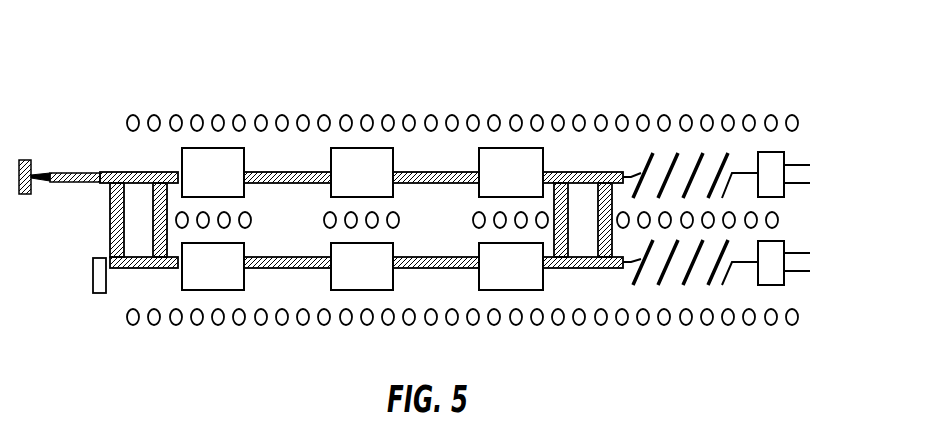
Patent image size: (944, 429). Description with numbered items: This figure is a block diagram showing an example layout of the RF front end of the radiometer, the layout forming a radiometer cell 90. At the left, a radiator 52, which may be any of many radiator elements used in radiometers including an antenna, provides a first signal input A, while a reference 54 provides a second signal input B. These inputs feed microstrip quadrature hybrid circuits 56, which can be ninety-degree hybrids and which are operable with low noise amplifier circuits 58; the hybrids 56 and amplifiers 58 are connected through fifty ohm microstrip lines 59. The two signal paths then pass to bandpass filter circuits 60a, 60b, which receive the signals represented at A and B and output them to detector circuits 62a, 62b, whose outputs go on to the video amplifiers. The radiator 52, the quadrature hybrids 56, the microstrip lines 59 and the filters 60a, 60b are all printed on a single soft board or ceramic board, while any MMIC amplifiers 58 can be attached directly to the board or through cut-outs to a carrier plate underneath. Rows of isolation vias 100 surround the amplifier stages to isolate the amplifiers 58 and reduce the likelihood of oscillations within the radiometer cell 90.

The radiator 52 is at (31, 163).
The reference 54 is at (93, 283).
The microstrip quadrature hybrid circuits 56 is at (122, 172).
The low noise amplifier circuits 58 is at (229, 148).
The 50 ohm microstrip lines 59 is at (282, 268).
The bandpass filter circuit 60a is at (694, 153).
The bandpass filter circuit 60b is at (692, 285).
The detector circuit 62a is at (779, 152).
The detector circuit 62b is at (776, 285).
The radiometer cell 90 is at (452, 70).
The isolation vias 100 is at (388, 113).